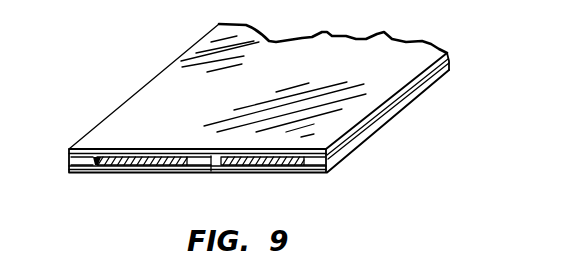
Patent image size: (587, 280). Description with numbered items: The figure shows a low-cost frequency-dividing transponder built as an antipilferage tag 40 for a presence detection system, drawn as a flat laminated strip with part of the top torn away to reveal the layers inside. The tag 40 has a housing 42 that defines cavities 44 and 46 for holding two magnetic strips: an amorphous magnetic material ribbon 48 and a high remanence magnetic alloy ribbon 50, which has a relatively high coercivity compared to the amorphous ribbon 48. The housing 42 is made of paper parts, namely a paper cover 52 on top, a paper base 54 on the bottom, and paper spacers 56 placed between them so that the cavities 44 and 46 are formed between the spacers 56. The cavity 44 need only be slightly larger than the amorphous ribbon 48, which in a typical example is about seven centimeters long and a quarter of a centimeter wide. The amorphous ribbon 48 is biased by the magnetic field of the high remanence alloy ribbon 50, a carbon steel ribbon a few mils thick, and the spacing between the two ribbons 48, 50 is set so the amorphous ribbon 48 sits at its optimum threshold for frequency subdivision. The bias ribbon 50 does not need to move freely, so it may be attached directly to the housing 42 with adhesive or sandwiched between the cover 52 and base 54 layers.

The antipilferage tag 40 is at (160, 54).
The housing 42 is at (143, 97).
The cavity 44 is at (98, 167).
The cavity 46 is at (218, 167).
The amorphous magnetic material ribbon 48 is at (148, 168).
The high remanence magnetic alloy ribbon 50 is at (288, 168).
The paper cover 52 is at (380, 101).
The paper base 54 is at (376, 134).
The paper spacers 56 is at (72, 162).